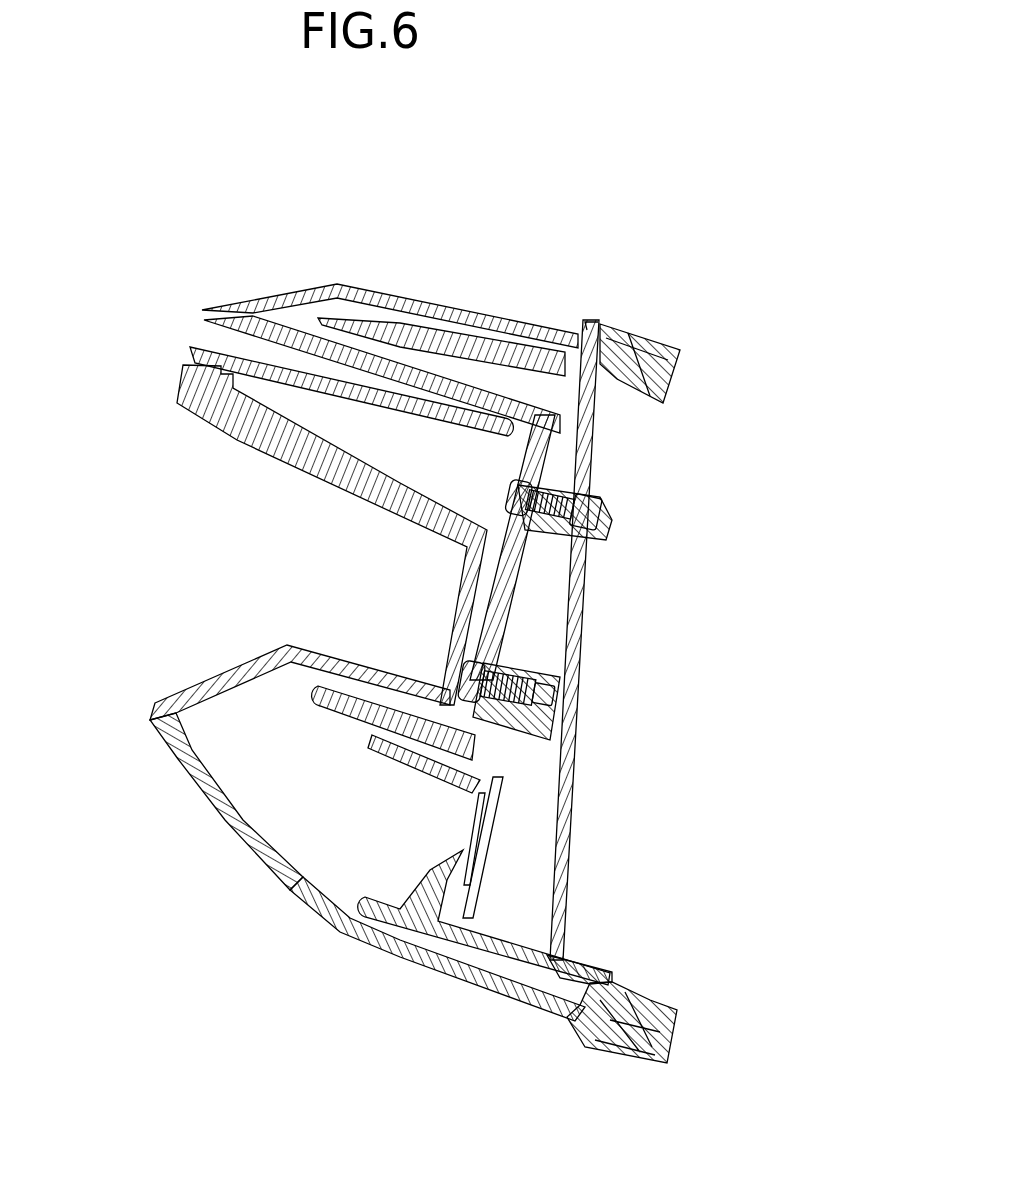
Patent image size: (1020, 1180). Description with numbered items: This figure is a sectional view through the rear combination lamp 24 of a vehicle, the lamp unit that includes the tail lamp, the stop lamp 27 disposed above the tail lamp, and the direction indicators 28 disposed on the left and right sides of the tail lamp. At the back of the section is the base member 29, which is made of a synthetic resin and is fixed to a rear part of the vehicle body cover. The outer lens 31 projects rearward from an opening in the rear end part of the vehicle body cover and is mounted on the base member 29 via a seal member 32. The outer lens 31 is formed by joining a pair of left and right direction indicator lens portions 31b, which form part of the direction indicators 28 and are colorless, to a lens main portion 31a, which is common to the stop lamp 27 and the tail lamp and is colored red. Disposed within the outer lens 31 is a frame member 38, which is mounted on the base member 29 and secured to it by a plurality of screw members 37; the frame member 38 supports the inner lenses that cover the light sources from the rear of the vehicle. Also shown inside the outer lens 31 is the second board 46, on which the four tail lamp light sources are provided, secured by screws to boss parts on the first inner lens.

The rear combination lamp 24 is at (448, 992).
The stop lamp 27 is at (297, 268).
The direction indicator 28 is at (238, 858).
The base member 29 is at (582, 645).
The outer lens 31 is at (318, 928).
The lens main portion 31a is at (207, 418).
The direction indicator lens portion 31b is at (167, 750).
The seal member 32 is at (660, 352).
The screw member 37 is at (468, 660).
The frame member 38 is at (515, 588).
The second board 46 is at (490, 863).